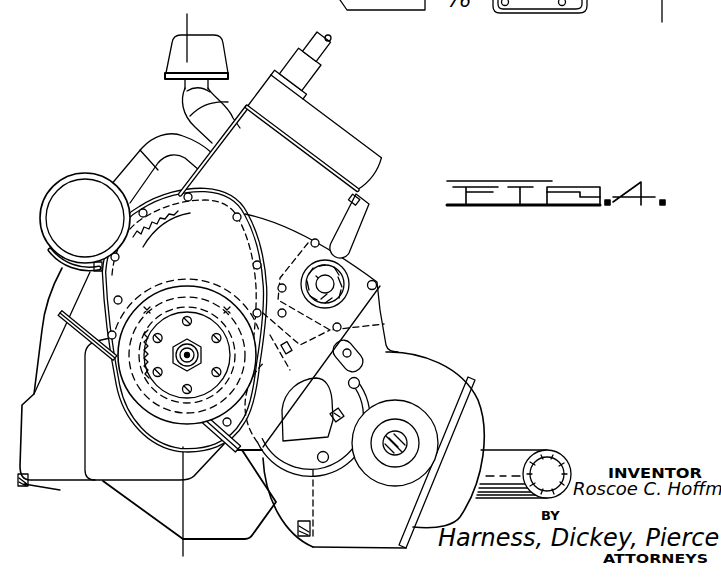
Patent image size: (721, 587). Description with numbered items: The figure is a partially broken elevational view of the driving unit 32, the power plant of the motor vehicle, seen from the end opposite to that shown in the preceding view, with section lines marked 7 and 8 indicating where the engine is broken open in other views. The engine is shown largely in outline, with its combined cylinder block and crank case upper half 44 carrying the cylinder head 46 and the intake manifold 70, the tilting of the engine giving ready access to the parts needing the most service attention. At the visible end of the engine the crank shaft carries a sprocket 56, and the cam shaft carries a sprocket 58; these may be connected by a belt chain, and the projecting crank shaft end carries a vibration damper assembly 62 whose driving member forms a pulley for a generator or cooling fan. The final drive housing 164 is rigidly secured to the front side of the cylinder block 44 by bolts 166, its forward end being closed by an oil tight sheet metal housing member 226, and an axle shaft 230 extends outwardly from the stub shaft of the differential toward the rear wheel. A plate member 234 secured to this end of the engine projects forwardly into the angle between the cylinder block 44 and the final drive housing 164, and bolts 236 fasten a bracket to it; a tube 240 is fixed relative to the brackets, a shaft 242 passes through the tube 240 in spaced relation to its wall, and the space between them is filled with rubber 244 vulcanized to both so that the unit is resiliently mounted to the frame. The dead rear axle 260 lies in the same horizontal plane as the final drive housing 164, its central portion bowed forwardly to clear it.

The section line 7-7 indicator 7 is at (692, 25).
The section line 8-8 indicator 8 is at (165, 12).
The driving unit 32 is at (384, 157).
The cylinder block 44 is at (162, 296).
The cylinder head 46 is at (314, 111).
The sprocket 56 is at (138, 370).
The sprocket 58 is at (137, 223).
The vibration damper assembly 62 is at (163, 410).
The intake manifold 70 is at (165, 145).
The final drive housing 164 is at (443, 368).
The bolts 166 is at (382, 352).
The sheet metal housing member 226 is at (483, 427).
The axle shaft 230 is at (396, 457).
The plate member 234 is at (297, 198).
The bolts 236 is at (376, 283).
The tube 240 is at (352, 256).
The shaft 242 is at (349, 271).
The rubber 244 is at (348, 301).
The rear axle 260 is at (575, 436).